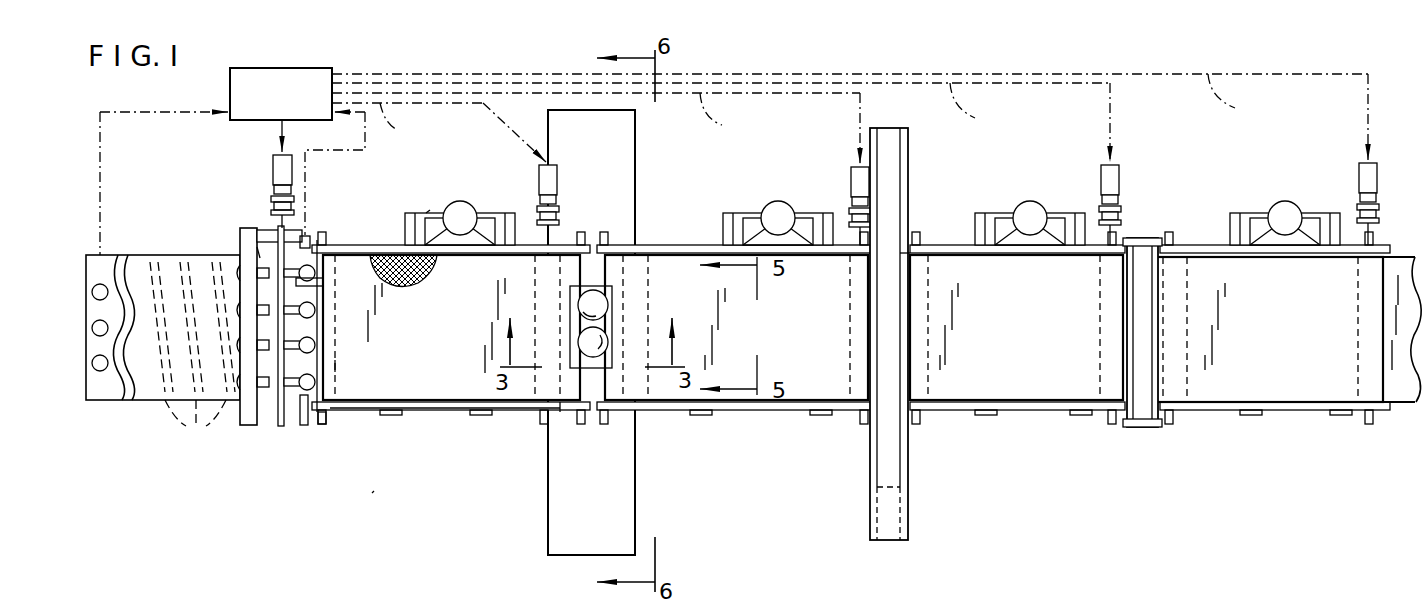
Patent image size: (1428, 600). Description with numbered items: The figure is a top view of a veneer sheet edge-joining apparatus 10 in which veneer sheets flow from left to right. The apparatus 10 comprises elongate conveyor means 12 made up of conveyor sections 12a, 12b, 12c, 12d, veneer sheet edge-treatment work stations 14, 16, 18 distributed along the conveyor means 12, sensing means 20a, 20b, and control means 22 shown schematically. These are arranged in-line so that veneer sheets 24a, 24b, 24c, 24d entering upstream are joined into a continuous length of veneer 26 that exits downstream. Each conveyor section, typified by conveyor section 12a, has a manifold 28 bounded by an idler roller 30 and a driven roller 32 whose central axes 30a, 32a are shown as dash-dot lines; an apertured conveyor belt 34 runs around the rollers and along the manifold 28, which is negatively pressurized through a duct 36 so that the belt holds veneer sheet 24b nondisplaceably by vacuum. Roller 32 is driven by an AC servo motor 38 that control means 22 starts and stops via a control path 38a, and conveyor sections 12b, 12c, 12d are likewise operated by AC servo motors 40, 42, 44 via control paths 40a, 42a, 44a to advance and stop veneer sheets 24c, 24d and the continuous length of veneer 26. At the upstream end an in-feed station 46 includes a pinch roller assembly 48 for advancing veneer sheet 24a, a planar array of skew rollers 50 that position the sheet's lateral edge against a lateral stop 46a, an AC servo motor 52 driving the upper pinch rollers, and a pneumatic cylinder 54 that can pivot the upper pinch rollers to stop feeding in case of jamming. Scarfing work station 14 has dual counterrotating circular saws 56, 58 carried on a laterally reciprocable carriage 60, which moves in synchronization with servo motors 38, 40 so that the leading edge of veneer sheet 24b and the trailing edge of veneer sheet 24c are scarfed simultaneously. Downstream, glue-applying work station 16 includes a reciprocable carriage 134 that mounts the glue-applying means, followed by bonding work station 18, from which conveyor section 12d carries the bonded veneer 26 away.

The veneer sheet edge-joining apparatus 10 is at (372, 493).
The conveyor means 12 is at (427, 480).
The conveyor section 12a is at (428, 208).
The conveyor section 12b is at (740, 212).
The conveyor section 12c is at (995, 212).
The conveyor section 12d is at (1245, 212).
The scarfing work station 14 is at (652, 212).
The glue-applying work station 16 is at (930, 224).
The bonding work station 18 is at (1150, 232).
The sensing means 20a is at (102, 402).
The sensing means 20b is at (308, 422).
The control means 22 is at (290, 68).
The veneer sheet 24a is at (112, 272).
The veneer sheet 24b is at (448, 326).
The veneer sheet 24c is at (736, 327).
The veneer sheet 24d is at (1016, 327).
The continuous length of veneer 26 is at (1289, 329).
The manifold 28 is at (392, 412).
The idler roller 30 is at (338, 366).
The central axis 30a is at (323, 418).
The driven roller 32 is at (498, 412).
The central axis 32a is at (546, 426).
The conveyor belt 34 is at (398, 257).
The duct 36 is at (471, 206).
The AC servo motor 38 is at (538, 188).
The control path 38a is at (409, 124).
The AC servo motor 40 is at (850, 190).
The control path 40a is at (733, 114).
The AC servo motor 42 is at (1100, 180).
The control path 42a is at (985, 108).
The AC servo motor 44 is at (1357, 178).
The control path 44a is at (1238, 100).
The in-feed station 46 is at (237, 420).
The lateral stop 46a is at (238, 258).
The pinch roller assembly 48 is at (277, 420).
The skew rollers 50 is at (192, 356).
The AC servo motor 52 is at (272, 176).
The pneumatic cylinder 54 is at (324, 283).
The circular saw 56 is at (608, 335).
The circular saw 58 is at (578, 299).
The reciprocable carriage 60 is at (595, 290).
The reciprocable carriage 134 is at (896, 484).